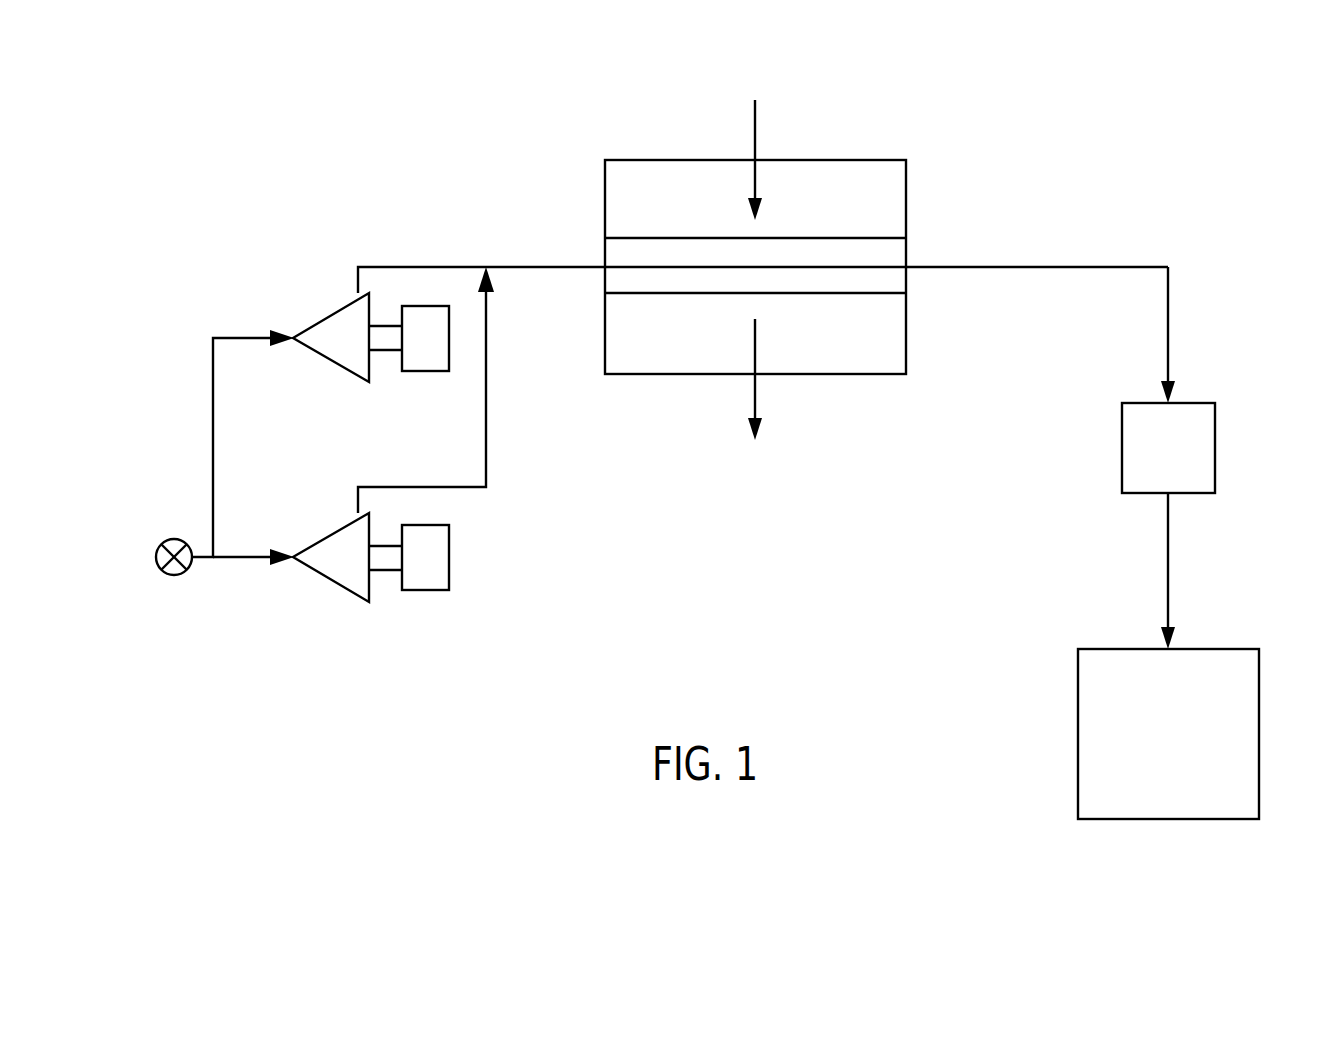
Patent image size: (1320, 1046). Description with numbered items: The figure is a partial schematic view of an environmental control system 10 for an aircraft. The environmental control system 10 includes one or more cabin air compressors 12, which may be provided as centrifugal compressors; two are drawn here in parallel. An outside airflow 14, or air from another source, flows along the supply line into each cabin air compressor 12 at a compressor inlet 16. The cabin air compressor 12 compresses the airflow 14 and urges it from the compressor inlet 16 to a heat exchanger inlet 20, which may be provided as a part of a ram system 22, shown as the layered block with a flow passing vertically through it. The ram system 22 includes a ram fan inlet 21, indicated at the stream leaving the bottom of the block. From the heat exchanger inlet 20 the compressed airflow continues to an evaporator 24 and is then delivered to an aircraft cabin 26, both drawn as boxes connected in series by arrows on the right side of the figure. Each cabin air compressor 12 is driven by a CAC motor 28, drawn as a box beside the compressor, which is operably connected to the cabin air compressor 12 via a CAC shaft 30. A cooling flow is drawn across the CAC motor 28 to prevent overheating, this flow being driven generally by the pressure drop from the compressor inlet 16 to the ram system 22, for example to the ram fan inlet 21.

The environmental control system 10 is at (340, 160).
The cabin air compressor 12 is at (330, 312).
The outside airflow 14 is at (213, 455).
The compressor inlet 16 is at (293, 338).
The heat exchanger inlet 20 is at (605, 253).
The ram fan inlet 21 is at (767, 477).
The ram system 22 is at (676, 170).
The evaporator 24 is at (1122, 452).
The aircraft cabin 26 is at (1078, 742).
The CAC motor 28 is at (424, 372).
The CAC shaft 30 is at (378, 352).